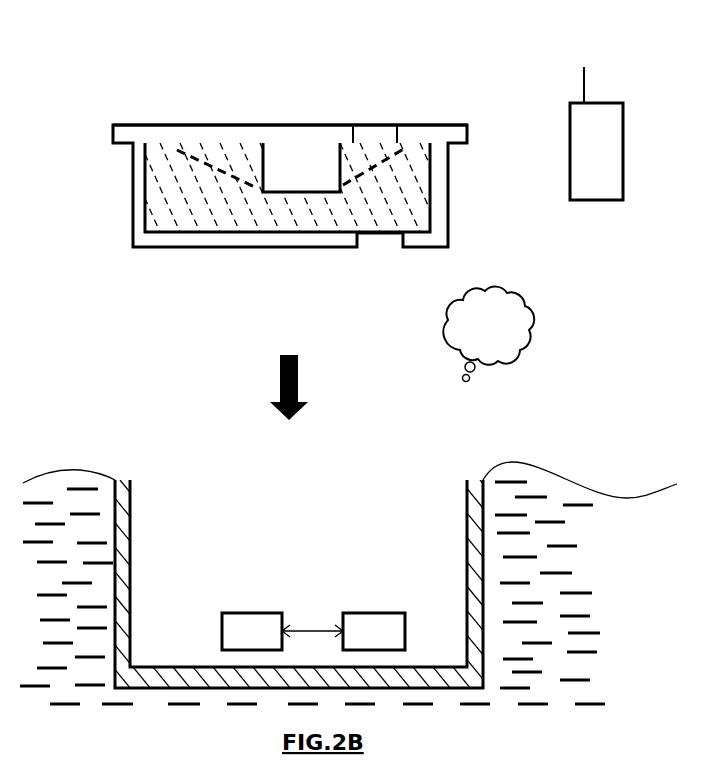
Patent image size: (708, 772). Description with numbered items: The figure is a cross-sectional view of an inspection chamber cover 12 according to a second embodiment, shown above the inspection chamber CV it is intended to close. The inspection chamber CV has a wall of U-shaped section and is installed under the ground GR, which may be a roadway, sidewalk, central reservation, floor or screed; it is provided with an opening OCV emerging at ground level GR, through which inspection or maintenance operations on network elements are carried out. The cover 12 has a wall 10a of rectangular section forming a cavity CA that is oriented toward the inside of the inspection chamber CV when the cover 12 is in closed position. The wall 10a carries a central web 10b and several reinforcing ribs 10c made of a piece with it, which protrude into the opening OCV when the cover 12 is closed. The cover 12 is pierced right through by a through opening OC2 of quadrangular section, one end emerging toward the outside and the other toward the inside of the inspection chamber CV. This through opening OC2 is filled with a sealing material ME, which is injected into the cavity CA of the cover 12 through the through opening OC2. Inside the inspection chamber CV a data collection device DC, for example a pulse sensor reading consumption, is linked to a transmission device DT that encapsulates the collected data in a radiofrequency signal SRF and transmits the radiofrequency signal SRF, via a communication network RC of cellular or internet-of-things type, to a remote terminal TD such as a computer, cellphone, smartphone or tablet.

The cover 12 is at (157, 103).
The wall 10a is at (225, 124).
The central web 10b is at (300, 152).
The reinforcing ribs 10c is at (183, 157).
The through opening OC2 is at (358, 210).
The sealing material ME is at (173, 215).
The cavity CA is at (223, 187).
The remote terminal TD is at (570, 122).
The radiofrequency signal SRF is at (550, 257).
The communication network RC is at (488, 334).
The inspection chamber CV is at (403, 480).
The opening OCV is at (207, 492).
The ground GR is at (53, 470).
The transmission device DT is at (252, 631).
The data collection device DC is at (374, 631).